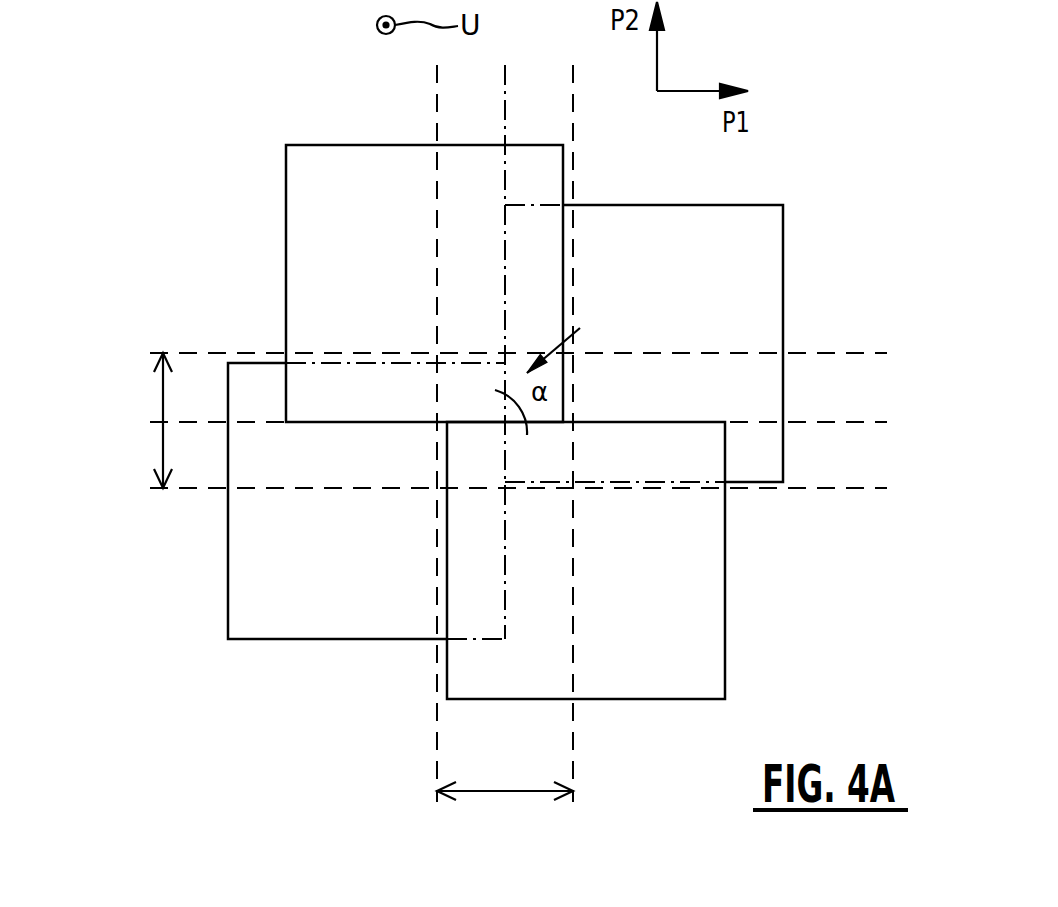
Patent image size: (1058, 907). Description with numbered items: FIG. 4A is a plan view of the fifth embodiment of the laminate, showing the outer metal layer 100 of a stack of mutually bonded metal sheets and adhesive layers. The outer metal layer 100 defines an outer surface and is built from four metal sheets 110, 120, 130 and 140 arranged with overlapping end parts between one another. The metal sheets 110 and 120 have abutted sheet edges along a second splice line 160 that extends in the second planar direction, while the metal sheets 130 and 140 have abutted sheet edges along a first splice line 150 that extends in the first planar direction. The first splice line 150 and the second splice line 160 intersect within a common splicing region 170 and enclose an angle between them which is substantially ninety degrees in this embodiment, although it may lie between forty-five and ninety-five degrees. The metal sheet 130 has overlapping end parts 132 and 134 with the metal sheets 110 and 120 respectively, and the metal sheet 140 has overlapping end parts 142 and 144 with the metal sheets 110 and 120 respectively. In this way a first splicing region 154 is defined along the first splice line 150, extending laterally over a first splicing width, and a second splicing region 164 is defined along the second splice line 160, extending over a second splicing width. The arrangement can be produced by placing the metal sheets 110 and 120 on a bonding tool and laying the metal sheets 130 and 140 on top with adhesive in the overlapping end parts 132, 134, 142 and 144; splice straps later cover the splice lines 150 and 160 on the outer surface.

The outer metal layer 100 is at (182, 121).
The metal sheet 110 is at (298, 622).
The metal sheet 120 is at (720, 228).
The metal sheet 130 is at (364, 157).
The overlapping end part 132 is at (346, 398).
The overlapping end part 134 is at (525, 262).
The metal sheet 140 is at (663, 683).
The overlapping end part 142 is at (483, 595).
The overlapping end part 144 is at (648, 448).
The first splice line 150 is at (817, 422).
The first splicing region 154 is at (162, 402).
The second splice line 160 is at (506, 97).
The second splicing region 164 is at (498, 791).
The common splicing region 170 is at (580, 328).